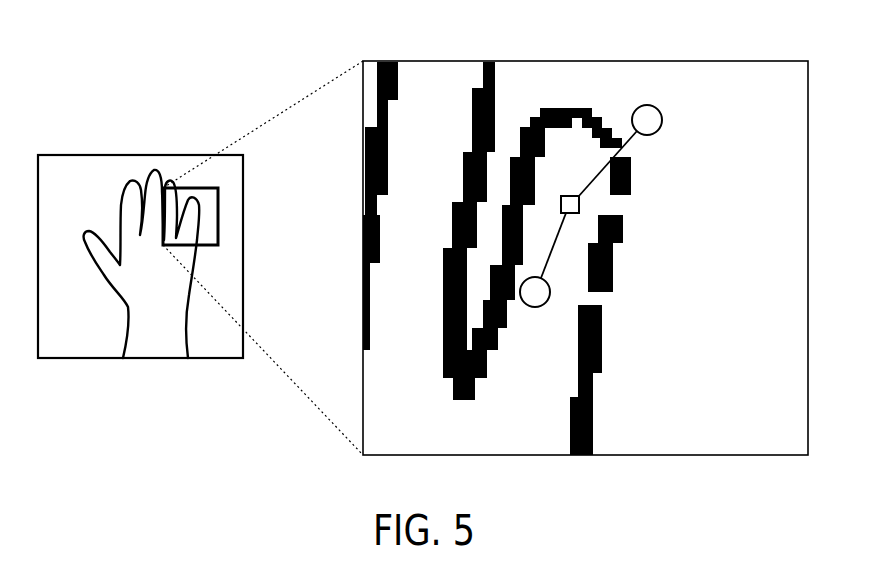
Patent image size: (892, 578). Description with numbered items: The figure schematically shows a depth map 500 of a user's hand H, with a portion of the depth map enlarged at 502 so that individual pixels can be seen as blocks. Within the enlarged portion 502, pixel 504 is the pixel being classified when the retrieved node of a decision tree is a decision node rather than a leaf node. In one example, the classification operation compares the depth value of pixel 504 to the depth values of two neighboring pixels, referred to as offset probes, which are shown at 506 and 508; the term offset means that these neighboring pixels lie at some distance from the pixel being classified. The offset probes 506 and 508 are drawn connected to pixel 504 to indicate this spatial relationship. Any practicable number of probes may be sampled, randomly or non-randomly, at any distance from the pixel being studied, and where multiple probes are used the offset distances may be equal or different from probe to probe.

The depth map 500 is at (140, 231).
The enlarged portion of the depth map 502 is at (617, 60).
The pixel 504 is at (580, 206).
The offset probe 506 is at (663, 122).
The offset probe 508 is at (551, 292).
The user's hand H is at (120, 298).